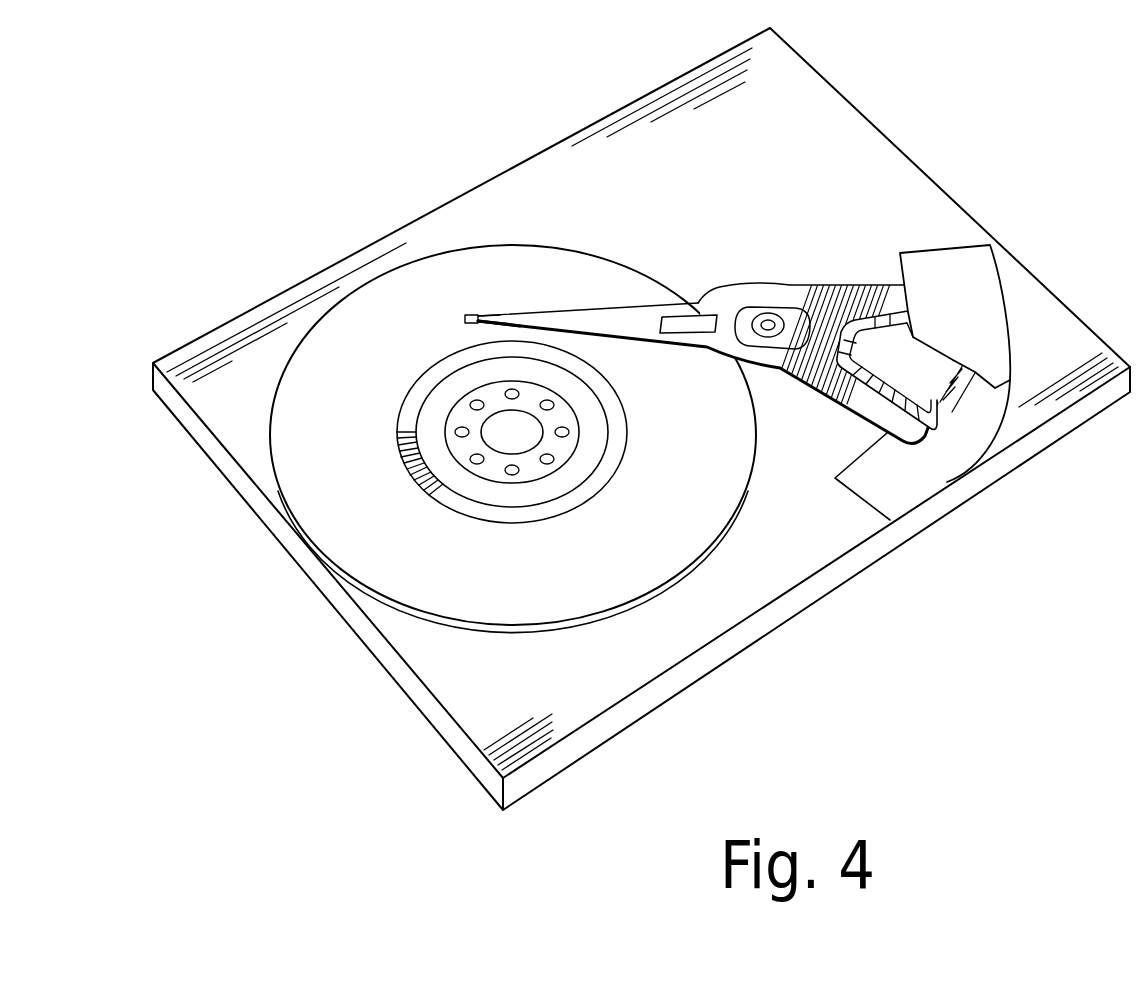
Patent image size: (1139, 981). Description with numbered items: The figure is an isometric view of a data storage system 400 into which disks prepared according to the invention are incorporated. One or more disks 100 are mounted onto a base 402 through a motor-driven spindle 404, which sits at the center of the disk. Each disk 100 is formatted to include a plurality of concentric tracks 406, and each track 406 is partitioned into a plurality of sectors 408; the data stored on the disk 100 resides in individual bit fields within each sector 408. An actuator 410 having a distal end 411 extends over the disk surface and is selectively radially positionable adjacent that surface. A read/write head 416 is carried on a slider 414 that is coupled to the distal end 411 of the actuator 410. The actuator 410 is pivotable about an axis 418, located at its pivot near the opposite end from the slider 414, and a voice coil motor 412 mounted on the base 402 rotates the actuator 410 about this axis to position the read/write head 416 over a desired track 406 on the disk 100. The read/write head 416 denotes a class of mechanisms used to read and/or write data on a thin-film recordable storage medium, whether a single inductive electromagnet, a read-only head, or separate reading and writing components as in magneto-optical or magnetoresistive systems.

The data storage system 400 is at (297, 122).
The base 402 is at (867, 552).
The disk 100 is at (335, 527).
The motor-driven spindle 404 is at (523, 453).
The track 406 is at (404, 400).
The sector 408 is at (408, 463).
The actuator 410 is at (630, 323).
The distal end 411 is at (493, 326).
The voice coil motor 412 is at (1005, 302).
The slider 414 is at (477, 313).
The read/write head 416 is at (466, 324).
The axis 418 is at (779, 314).